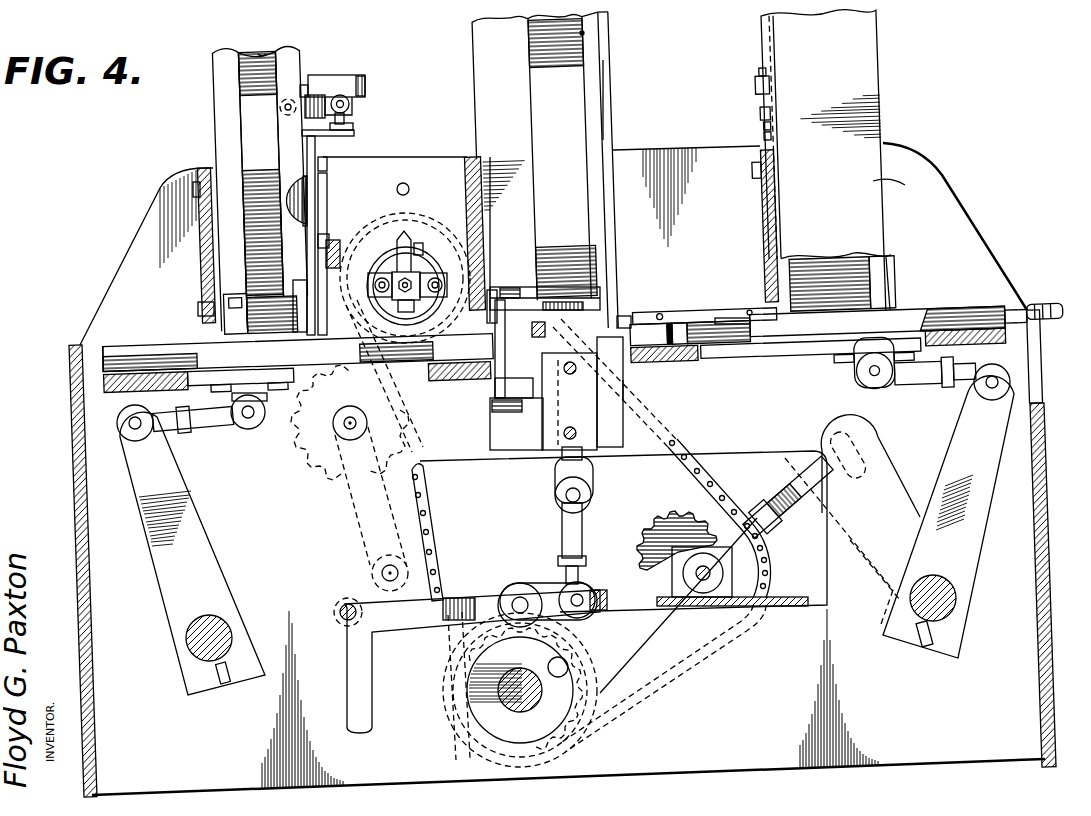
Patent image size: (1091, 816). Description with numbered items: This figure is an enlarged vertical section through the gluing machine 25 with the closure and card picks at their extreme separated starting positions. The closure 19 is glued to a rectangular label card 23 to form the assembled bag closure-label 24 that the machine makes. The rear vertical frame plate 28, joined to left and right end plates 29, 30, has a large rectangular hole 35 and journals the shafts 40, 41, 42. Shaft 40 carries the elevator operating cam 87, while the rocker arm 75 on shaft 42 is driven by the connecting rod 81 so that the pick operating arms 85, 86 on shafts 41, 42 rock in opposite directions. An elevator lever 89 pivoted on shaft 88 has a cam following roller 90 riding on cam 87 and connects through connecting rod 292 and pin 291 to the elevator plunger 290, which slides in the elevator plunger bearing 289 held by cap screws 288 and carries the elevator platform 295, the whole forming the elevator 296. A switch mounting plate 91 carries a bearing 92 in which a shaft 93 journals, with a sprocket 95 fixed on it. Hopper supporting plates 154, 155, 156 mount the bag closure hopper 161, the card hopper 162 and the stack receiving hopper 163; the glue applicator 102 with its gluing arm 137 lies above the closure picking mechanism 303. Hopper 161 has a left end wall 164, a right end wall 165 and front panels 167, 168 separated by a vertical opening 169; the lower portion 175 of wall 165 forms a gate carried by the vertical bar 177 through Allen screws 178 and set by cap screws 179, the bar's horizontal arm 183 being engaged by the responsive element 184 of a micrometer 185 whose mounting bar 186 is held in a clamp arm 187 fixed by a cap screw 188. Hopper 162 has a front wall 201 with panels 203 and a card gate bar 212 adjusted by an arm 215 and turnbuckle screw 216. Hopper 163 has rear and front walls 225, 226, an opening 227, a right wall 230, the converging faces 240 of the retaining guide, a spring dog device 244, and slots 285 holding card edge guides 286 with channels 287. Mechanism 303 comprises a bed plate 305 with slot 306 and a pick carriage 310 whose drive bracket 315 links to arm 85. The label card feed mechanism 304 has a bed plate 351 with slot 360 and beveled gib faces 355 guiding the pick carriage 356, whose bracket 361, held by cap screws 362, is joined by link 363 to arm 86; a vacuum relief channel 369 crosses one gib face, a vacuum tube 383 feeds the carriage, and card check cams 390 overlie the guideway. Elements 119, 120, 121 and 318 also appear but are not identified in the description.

The closure 19 is at (263, 170).
The label card 23 is at (838, 262).
The assembled bag closure-label 24 is at (566, 246).
The gluing machine 25 is at (548, 422).
The rear vertical frame plate 28 is at (671, 150).
The left end plate 29 is at (70, 433).
The right end plate 30 is at (1045, 516).
The large rectangular hole 35 is at (745, 453).
The shaft 40 is at (507, 707).
The shaft 41 is at (230, 627).
The shaft 42 is at (957, 596).
The rocker arm 75 is at (898, 486).
The connecting rod 81 is at (598, 585).
The pick operating arm 85 is at (205, 550).
The pick operating arm 86 is at (963, 528).
The elevator operating cam 87 is at (470, 697).
The shaft 88 is at (341, 602).
The elevator lever 89 is at (390, 630).
The cam following roller 90 is at (520, 583).
The switch mounting plate 91 is at (790, 606).
The bearing 92 is at (735, 565).
The shaft 93 is at (723, 583).
The sprocket 95 is at (658, 520).
The glue applicator 102 is at (402, 228).
The link 119 is at (430, 500).
The sprocket 120 is at (312, 462).
The arm 121 is at (357, 521).
The gluing arm 137 is at (416, 242).
The hopper supporting plate 154 is at (200, 210).
The hopper supporting plate 155 is at (762, 192).
The hopper supporting plate 156 is at (467, 186).
The bag closure hopper 161 is at (306, 176).
The card hopper 162 is at (823, 166).
The assembled unit stack receiving hopper 163 is at (615, 100).
The left end wall 164 is at (198, 306).
The right end wall 165 is at (306, 205).
The front panel 167 is at (222, 55).
The front panel 168 is at (300, 58).
The vertical opening 169 is at (262, 54).
The closure hopper gate 175 is at (300, 300).
The vertical bar 177 is at (326, 186).
The Allen screws 178 is at (345, 232).
The cap screws 179 is at (327, 165).
The horizontal arm 183 is at (352, 134).
The responsive element 184 is at (349, 109).
The micrometer 185 is at (364, 80).
The mounting bar 186 is at (326, 104).
The clamp arm 187 is at (318, 97).
The cap screw 188 is at (280, 107).
The front wall 201 is at (905, 185).
The panels 203 is at (886, 273).
The card gate bar 212 is at (792, 262).
The arm 215 is at (757, 81).
The turnbuckle screw 216 is at (761, 111).
The rear wall 225 is at (624, 413).
The front wall 226 is at (551, 170).
The opening 227 is at (583, 33).
The right wall 230 is at (612, 128).
The converging faces 240 is at (494, 290).
The spring dog device 244 is at (495, 392).
The horizontal slots 285 is at (535, 336).
The horizontal card edge guides 286 is at (652, 308).
The card edge guide channels 287 is at (628, 318).
The cap screws 288 is at (571, 427).
The elevator plunger bearing 289 is at (545, 415).
The elevator plunger 290 is at (562, 455).
The pin 291 is at (566, 497).
The connecting rod 292 is at (584, 545).
The elevator platform 295 is at (604, 302).
The elevator 296 is at (626, 388).
The closure picking mechanism 303 is at (115, 343).
The label card feed mechanism 304 is at (978, 304).
The bed plate 305 is at (103, 384).
The longitudinal slot 306 is at (197, 352).
The pick carriage 310 is at (103, 360).
The drive bracket 315 is at (252, 430).
The rod 318 is at (203, 425).
The bed plate 351 is at (1008, 336).
The beveled faces 355 is at (742, 336).
The label card pick carriage 356 is at (820, 338).
The longitudinal slot 360 is at (715, 355).
The bracket 361 is at (876, 392).
The cap screws 362 is at (912, 340).
The link 363 is at (920, 388).
The vacuum relief channel 369 is at (674, 337).
The vacuum tube 383 is at (1050, 312).
The card check cams 390 is at (698, 306).